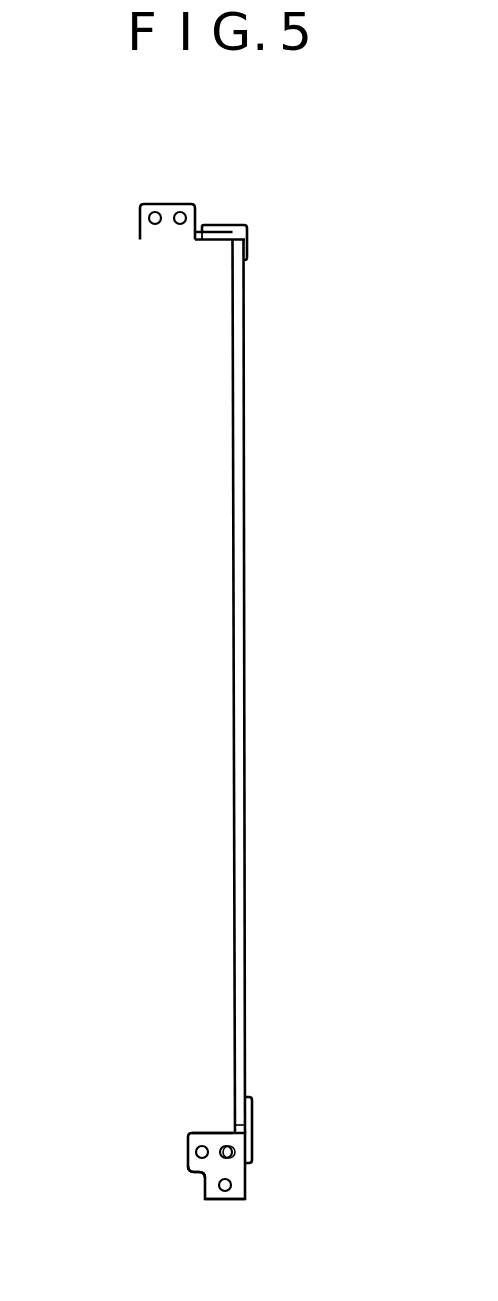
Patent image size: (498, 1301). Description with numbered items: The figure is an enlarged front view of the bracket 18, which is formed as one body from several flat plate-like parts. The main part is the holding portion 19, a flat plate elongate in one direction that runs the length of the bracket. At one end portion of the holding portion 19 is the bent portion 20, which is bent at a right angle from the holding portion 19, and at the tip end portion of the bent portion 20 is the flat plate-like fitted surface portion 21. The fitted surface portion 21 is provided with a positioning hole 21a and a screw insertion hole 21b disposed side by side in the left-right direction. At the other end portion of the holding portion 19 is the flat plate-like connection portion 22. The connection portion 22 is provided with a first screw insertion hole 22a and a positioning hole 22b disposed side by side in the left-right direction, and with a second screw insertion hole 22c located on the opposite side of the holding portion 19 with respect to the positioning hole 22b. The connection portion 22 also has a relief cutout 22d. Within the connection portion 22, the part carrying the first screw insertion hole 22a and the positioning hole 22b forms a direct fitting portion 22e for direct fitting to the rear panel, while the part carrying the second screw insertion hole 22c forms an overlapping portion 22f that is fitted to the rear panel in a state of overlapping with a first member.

The bracket 18 is at (296, 196).
The holding portion 19 is at (244, 498).
The bent portion 20 is at (205, 226).
The fitted surface portion 21 is at (170, 203).
The positioning hole 21a is at (140, 223).
The screw insertion hole 21b is at (188, 222).
The connection portion 22 is at (247, 1177).
The first screw insertion hole 22a is at (201, 1154).
The positioning hole 22b is at (234, 1156).
The second screw insertion hole 22c is at (232, 1190).
The relief cutout 22d is at (202, 1179).
The direct fitting portion 22e is at (213, 1136).
The overlapping portion 22f is at (213, 1199).